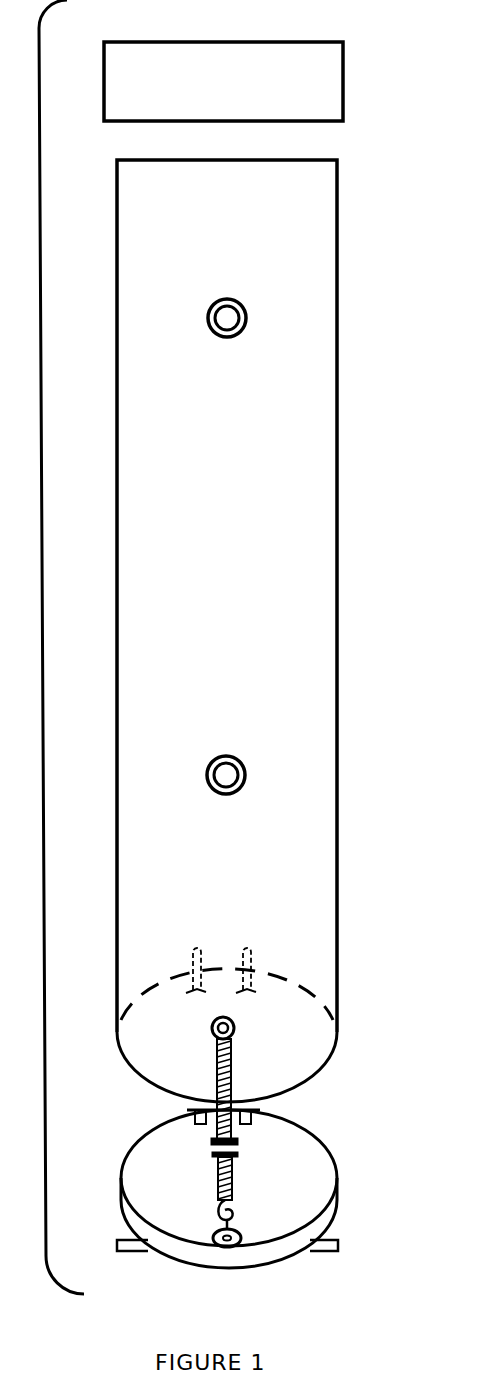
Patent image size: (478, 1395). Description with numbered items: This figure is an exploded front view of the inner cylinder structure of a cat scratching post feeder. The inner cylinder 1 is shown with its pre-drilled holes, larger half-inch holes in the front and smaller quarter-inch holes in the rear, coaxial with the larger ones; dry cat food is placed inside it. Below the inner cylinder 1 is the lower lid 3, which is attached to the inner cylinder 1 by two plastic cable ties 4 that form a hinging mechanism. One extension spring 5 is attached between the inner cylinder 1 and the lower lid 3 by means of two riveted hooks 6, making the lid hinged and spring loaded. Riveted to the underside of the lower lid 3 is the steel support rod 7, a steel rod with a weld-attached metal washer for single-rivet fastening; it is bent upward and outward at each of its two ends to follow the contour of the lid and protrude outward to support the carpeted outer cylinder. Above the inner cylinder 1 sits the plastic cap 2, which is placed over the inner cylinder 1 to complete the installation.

The inner cylinder 1 is at (342, 193).
The plastic cap 2 is at (270, 38).
The lower lid 3 is at (330, 1163).
The plastic cable ties 4 is at (196, 1120).
The extension spring 5 is at (240, 1176).
The riveted hooks 6 is at (236, 1228).
The steel support rod 7 is at (327, 1240).